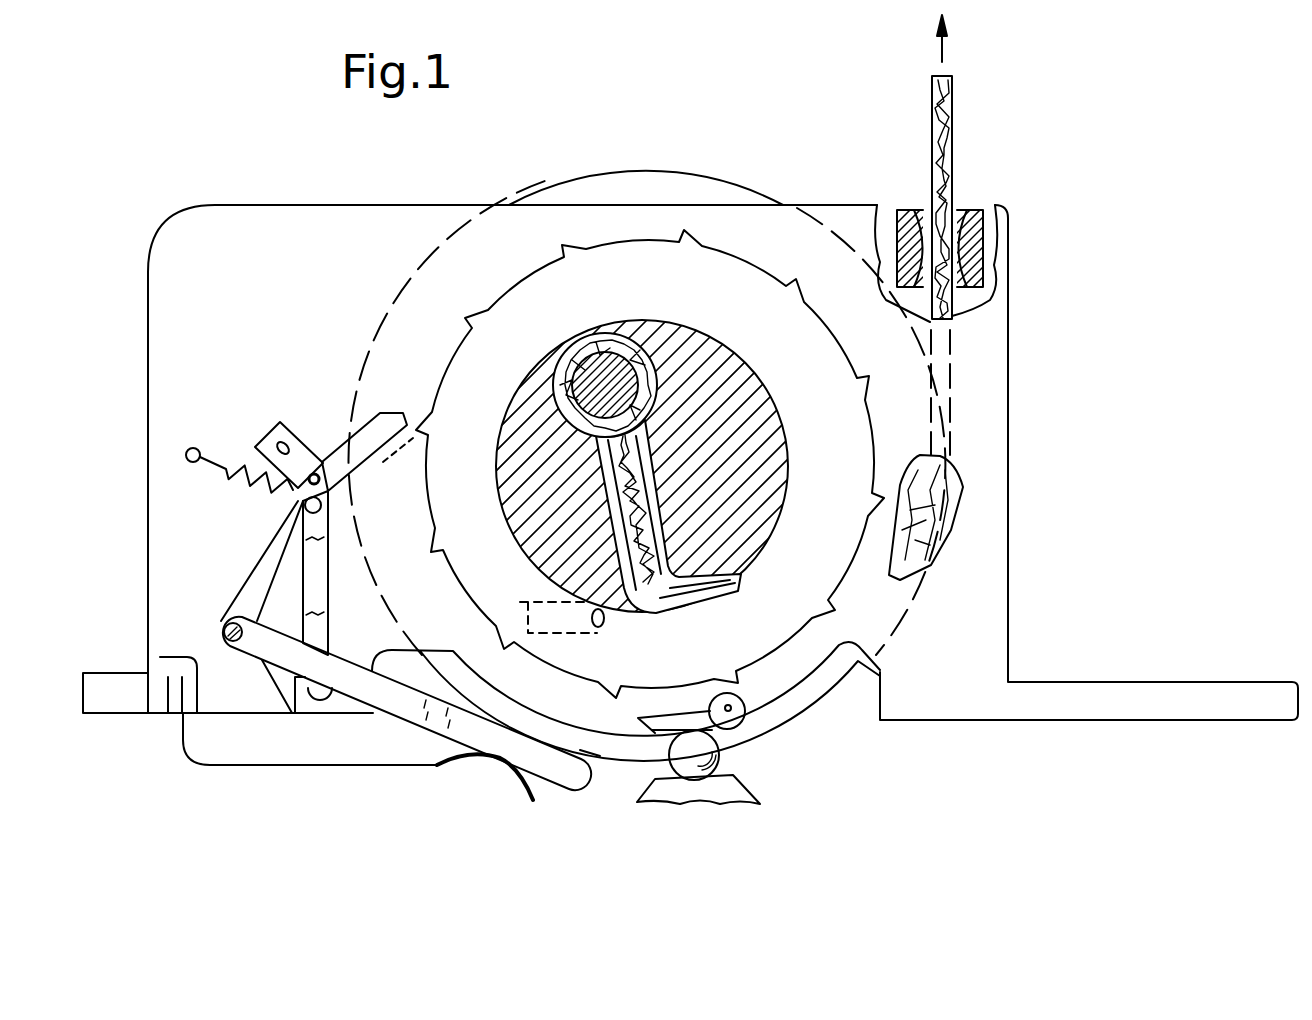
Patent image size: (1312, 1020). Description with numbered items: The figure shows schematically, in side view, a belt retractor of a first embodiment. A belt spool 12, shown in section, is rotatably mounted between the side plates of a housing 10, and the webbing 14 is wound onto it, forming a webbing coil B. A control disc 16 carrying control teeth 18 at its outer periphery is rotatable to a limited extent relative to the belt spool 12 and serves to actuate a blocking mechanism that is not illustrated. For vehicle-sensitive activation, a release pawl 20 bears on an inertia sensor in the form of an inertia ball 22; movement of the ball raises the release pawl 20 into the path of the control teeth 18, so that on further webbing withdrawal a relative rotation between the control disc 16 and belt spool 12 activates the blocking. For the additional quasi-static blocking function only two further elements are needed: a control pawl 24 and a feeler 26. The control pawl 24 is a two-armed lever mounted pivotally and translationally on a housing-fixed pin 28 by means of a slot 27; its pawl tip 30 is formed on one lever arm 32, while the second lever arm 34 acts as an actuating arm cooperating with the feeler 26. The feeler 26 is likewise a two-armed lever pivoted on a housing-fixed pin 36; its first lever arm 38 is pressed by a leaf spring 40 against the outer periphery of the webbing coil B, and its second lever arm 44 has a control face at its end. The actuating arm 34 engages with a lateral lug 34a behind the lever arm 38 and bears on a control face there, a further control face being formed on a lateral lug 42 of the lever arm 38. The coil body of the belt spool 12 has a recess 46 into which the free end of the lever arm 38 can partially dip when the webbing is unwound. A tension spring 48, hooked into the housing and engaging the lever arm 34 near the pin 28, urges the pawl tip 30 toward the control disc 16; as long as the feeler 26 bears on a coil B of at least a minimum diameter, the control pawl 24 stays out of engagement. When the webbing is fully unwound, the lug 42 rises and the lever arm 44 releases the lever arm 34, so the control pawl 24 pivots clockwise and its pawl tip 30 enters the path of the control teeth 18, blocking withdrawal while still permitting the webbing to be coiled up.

The housing 10 is at (1000, 380).
The belt spool 12 is at (740, 380).
The webbing 14 is at (952, 157).
The control disc 16 is at (827, 573).
The control teeth 18 is at (438, 580).
The release pawl 20 is at (657, 740).
The inertia ball 22 is at (677, 778).
The control pawl 24 is at (337, 432).
The feeler 26 is at (408, 729).
The slot 27 is at (280, 443).
The pin 28 is at (318, 457).
The pawl tip 30 is at (397, 413).
The lever arm 32 is at (363, 447).
The lever arm 34 is at (328, 573).
The lateral lug 34a is at (313, 707).
The pin 36 is at (222, 633).
The lever arm 38 is at (497, 743).
The leaf spring 40 is at (250, 767).
The lateral lug 42 is at (280, 683).
The lever arm 44 is at (262, 577).
The recess 46 is at (603, 627).
The tension spring 48 is at (267, 487).
The webbing coil B is at (583, 762).